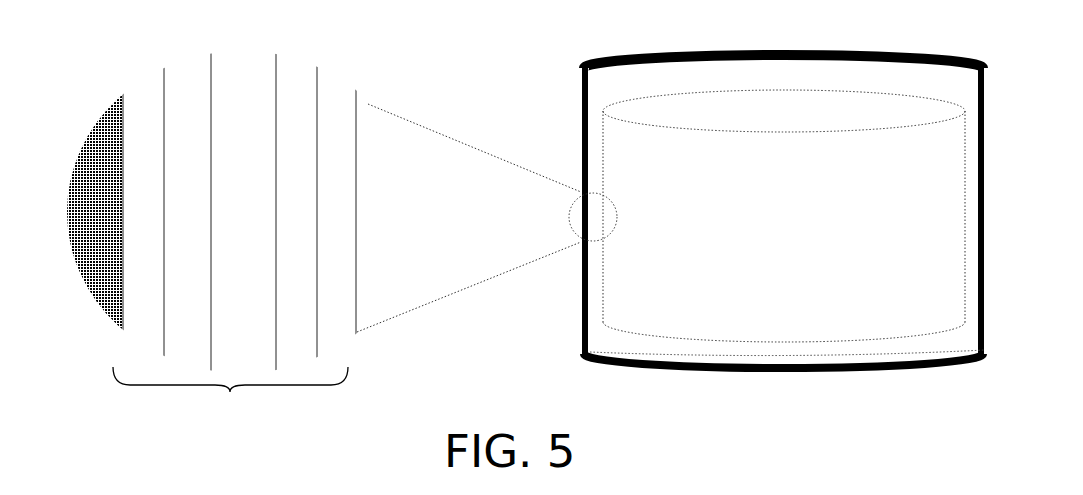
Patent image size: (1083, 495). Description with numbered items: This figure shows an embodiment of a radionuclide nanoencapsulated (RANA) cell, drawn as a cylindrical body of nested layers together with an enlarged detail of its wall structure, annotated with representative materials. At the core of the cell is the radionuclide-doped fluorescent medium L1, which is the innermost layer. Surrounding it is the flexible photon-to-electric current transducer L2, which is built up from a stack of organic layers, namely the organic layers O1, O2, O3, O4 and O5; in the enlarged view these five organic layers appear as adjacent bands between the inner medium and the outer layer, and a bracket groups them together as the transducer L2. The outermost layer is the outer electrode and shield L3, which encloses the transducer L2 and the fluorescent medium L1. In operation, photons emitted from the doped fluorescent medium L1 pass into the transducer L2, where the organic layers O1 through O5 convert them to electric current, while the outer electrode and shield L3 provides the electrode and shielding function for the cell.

The radionuclide-doped fluorescent medium L1 is at (660, 212).
The flexible photon-to-electric current transducer L2 is at (549, 244).
The outer electrode and shield L3 is at (521, 203).
The organic layer O1 is at (143, 212).
The organic layer O2 is at (187, 212).
The organic layer O3 is at (243, 212).
The organic layer O4 is at (296, 212).
The organic layer O5 is at (336, 212).